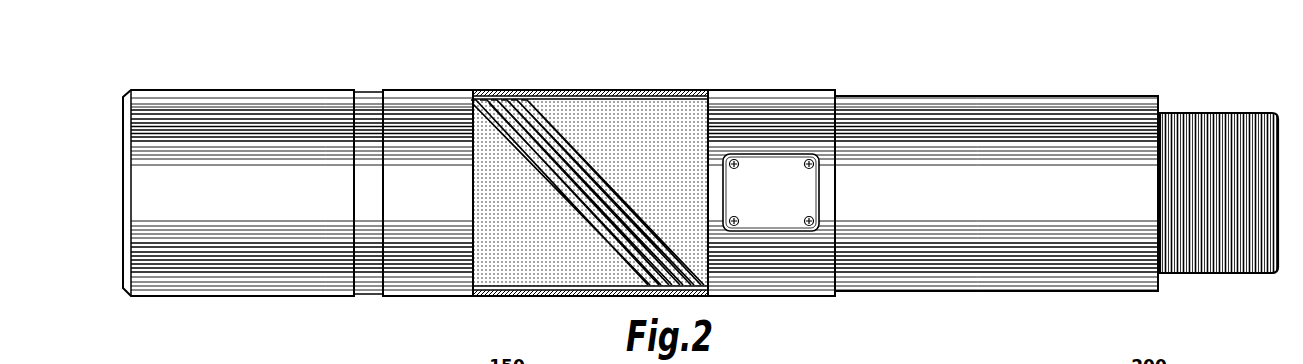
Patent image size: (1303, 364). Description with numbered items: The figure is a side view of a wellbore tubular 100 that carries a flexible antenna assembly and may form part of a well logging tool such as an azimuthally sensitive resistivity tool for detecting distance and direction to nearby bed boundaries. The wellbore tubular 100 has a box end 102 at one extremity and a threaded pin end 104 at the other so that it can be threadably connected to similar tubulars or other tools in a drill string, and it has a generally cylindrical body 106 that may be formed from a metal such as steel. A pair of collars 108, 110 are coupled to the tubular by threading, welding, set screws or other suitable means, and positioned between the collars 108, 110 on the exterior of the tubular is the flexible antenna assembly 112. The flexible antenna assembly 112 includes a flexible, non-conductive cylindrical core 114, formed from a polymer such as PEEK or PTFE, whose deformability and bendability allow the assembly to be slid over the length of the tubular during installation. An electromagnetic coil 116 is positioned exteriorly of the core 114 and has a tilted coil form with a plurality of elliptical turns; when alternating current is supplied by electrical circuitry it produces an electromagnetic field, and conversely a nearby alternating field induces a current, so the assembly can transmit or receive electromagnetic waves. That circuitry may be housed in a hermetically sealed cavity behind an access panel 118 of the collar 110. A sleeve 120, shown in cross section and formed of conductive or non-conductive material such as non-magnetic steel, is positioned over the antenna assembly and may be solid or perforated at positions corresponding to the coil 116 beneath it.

The wellbore tubular 100 is at (700, 156).
The box end 102 is at (219, 90).
The pin end 104 is at (1232, 113).
The cylindrical body 106 is at (948, 96).
The collar 108 is at (427, 92).
The collar 110 is at (771, 163).
The flexible antenna assembly 112 is at (640, 114).
The flexible, non-conductive cylindrical core 114 is at (592, 156).
The electromagnetic coil 116 is at (510, 101).
The access panel 118 is at (786, 203).
The sleeve 120 is at (685, 90).